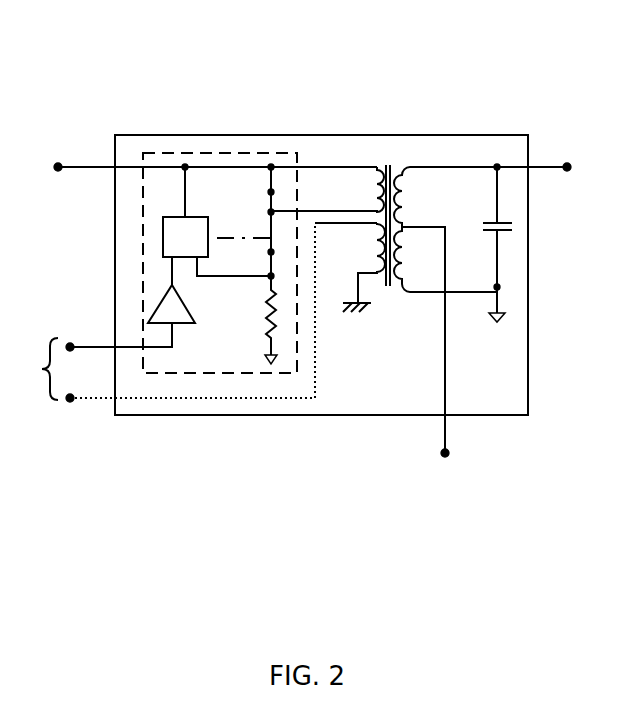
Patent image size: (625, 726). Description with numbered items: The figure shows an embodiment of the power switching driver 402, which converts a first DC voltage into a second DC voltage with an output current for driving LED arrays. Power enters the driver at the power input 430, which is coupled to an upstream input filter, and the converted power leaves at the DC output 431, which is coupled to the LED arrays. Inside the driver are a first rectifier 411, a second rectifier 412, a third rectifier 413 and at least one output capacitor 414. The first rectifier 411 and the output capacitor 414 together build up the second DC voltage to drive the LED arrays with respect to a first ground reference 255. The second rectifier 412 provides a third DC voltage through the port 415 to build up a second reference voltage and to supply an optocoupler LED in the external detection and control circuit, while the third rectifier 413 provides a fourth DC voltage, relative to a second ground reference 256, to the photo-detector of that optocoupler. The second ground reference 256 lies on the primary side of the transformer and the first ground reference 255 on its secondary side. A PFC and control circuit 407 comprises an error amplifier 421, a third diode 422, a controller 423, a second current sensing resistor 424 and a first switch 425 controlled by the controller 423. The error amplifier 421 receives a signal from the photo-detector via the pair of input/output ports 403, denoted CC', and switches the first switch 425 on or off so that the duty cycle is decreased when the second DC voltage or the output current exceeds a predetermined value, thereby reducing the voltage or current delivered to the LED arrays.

The power switching driver 402 is at (313, 132).
The pair of input/output ports 403 is at (44, 350).
The power factor correction (PFC) and control circuit 407 is at (138, 258).
The first rectifier 411 is at (424, 165).
The second rectifier 412 is at (419, 224).
The third rectifier 413 is at (353, 220).
The output capacitor 414 is at (505, 233).
The port 415 is at (445, 453).
The error amplifier 421 is at (168, 328).
The third diode 422 is at (278, 248).
The controller 423 is at (163, 217).
The second at least one current sensing resistor 424 is at (279, 376).
The first switch 425 is at (267, 232).
The power input 430 is at (57, 164).
The DC output 431 is at (566, 164).
The first ground reference 255 is at (500, 324).
The second ground reference 256 is at (358, 315).